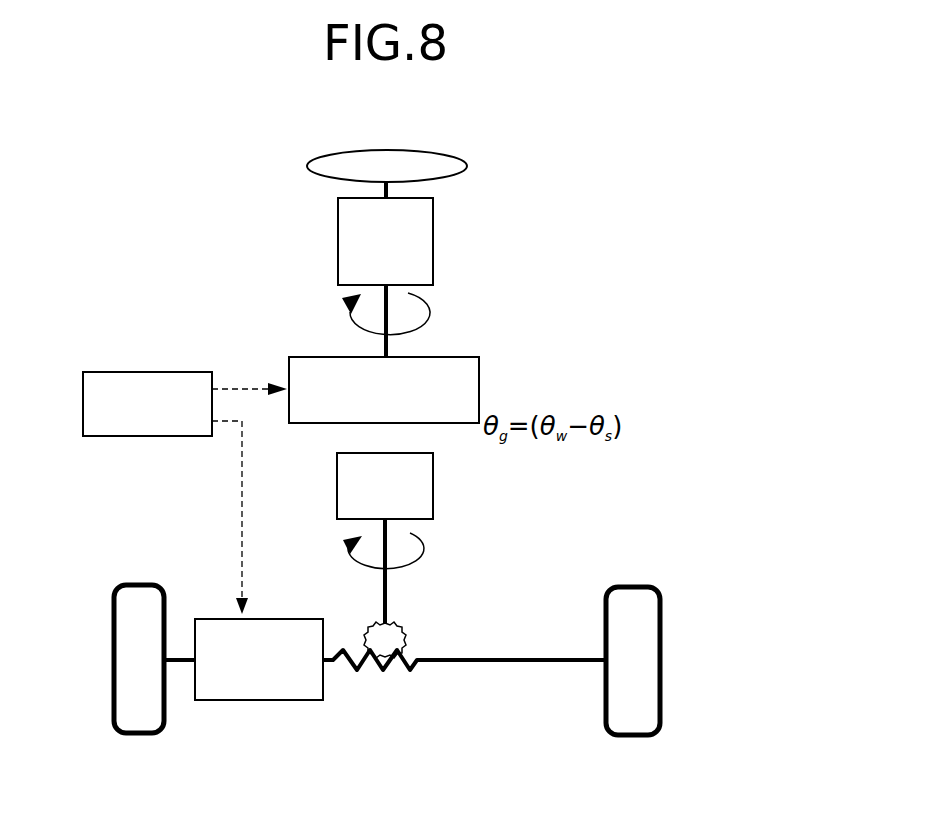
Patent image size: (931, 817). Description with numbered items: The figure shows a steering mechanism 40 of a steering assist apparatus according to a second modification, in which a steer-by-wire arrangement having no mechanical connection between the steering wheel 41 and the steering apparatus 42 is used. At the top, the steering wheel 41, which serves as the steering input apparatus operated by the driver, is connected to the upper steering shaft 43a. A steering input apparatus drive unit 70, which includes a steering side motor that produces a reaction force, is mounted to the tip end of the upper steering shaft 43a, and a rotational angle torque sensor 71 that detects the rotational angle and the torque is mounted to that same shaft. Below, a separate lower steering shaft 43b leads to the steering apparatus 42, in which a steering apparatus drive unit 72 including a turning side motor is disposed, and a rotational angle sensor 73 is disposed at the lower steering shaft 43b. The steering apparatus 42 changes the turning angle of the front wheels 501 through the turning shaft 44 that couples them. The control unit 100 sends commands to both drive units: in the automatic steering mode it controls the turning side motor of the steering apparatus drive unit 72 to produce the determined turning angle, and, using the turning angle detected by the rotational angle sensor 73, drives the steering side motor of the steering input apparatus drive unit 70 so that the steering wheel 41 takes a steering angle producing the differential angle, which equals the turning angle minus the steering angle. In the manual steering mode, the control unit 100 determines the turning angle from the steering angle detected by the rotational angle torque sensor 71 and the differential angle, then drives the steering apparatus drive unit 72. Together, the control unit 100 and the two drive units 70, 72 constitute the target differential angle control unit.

The steering mechanism 40 is at (383, 378).
The steering wheel 41 is at (395, 157).
The steering apparatus 42 is at (422, 631).
The upper steering shaft 43a is at (390, 340).
The lower steering shaft 43b is at (383, 612).
The turning shaft 44 is at (500, 648).
The steering input apparatus drive unit 70 is at (480, 377).
The rotational angle torque sensor 71 is at (433, 237).
The steering apparatus drive unit 72 is at (227, 701).
The rotational angle sensor 73 is at (433, 499).
The control unit 100 is at (125, 437).
The front wheels 501 is at (127, 667).